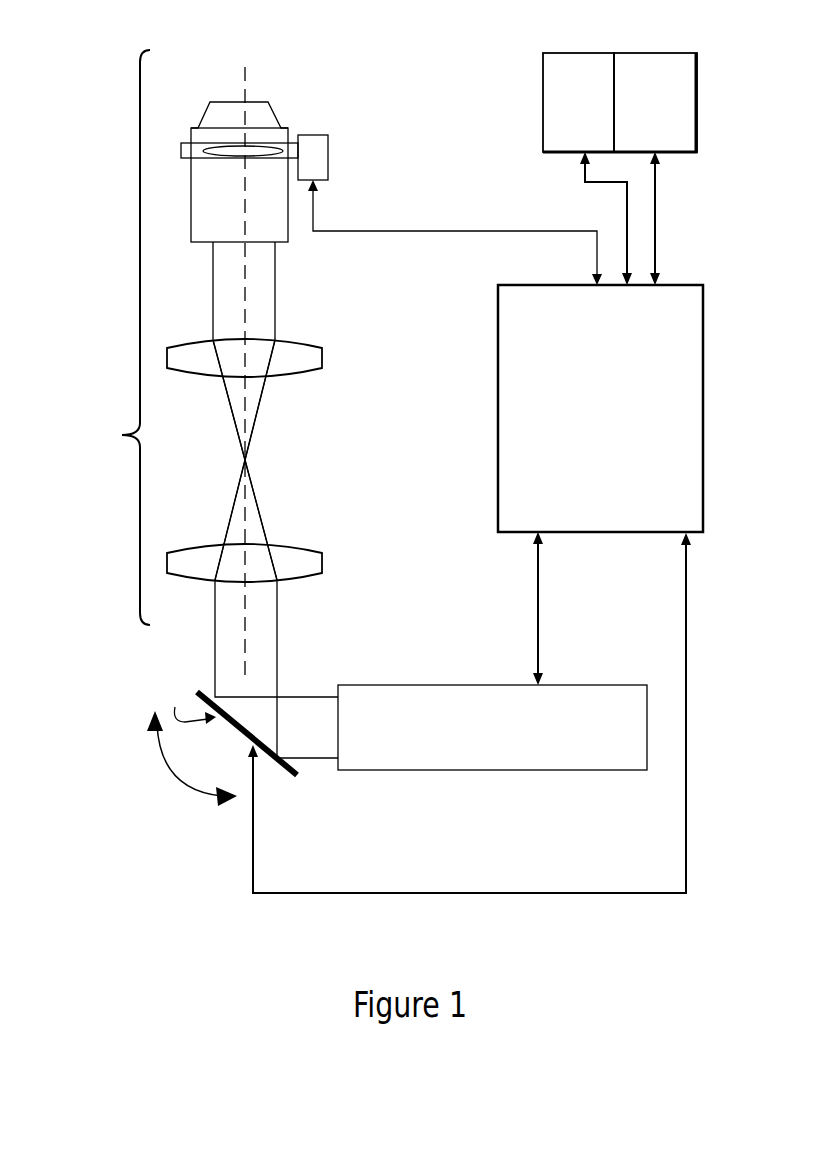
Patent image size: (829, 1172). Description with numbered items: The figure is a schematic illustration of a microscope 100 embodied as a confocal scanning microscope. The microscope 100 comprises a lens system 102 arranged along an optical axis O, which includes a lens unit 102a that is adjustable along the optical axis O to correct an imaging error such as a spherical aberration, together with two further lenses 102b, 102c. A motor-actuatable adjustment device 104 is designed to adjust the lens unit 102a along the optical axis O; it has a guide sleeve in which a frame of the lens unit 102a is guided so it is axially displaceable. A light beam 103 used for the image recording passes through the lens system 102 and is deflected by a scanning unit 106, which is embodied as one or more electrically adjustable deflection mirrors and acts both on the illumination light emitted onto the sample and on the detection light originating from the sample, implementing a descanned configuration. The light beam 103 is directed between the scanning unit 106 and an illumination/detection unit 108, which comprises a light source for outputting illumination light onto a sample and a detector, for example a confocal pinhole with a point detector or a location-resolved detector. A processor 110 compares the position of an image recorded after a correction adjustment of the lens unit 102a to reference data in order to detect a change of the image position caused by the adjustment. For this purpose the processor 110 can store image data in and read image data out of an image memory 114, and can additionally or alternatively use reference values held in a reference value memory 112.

The microscope 100 is at (427, 121).
The lens system 102 is at (152, 363).
The lens unit 102a is at (228, 143).
The further lens 102b is at (312, 358).
The further lens 102c is at (315, 565).
The light beam 103 is at (262, 403).
The optical axis O is at (245, 288).
The adjustment device 104 is at (315, 165).
The scanning unit 106 is at (415, 713).
The illumination/detection unit 108 is at (490, 742).
The processor 110 is at (522, 443).
The reference value memory 112 is at (555, 77).
The image memory 114 is at (683, 88).